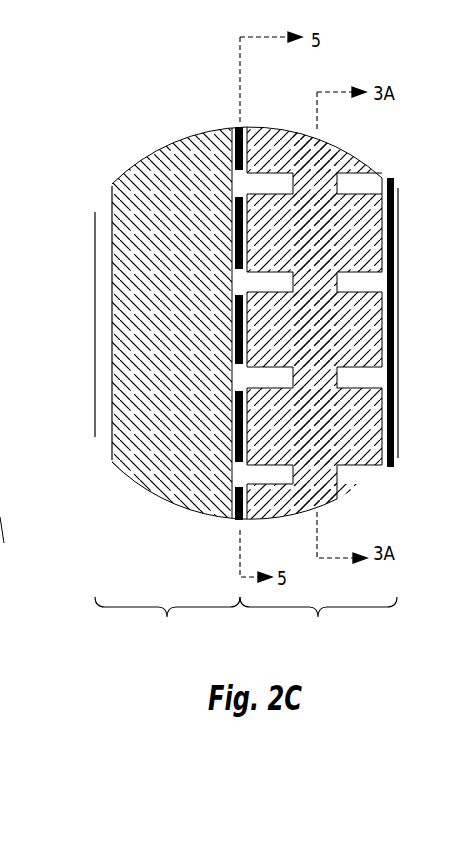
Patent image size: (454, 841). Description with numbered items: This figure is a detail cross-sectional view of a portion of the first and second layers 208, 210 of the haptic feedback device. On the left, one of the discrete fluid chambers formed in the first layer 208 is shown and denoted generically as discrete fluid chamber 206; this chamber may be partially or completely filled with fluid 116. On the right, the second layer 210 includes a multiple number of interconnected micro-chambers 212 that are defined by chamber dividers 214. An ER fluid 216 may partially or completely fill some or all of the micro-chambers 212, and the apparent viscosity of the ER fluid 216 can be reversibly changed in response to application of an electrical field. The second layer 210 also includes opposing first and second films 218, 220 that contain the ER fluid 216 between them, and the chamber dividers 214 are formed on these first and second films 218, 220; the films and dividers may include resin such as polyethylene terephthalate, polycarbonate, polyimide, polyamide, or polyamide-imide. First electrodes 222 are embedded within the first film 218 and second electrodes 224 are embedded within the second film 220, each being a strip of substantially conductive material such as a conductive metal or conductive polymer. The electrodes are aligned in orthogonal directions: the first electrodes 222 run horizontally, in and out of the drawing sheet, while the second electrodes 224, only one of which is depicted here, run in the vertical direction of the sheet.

The discrete fluid chamber 206 is at (172, 157).
The fluid 116 is at (163, 475).
The first electrodes 222 is at (388, 238).
The micro-chambers 212 is at (362, 340).
The first film 218 is at (248, 129).
The ER fluid 216 is at (315, 470).
The chamber dividers 214 is at (414, 256).
The second electrodes 224 is at (400, 226).
The second film 220 is at (398, 205).
The first layer 208 is at (167, 621).
The second layer 210 is at (318, 621).